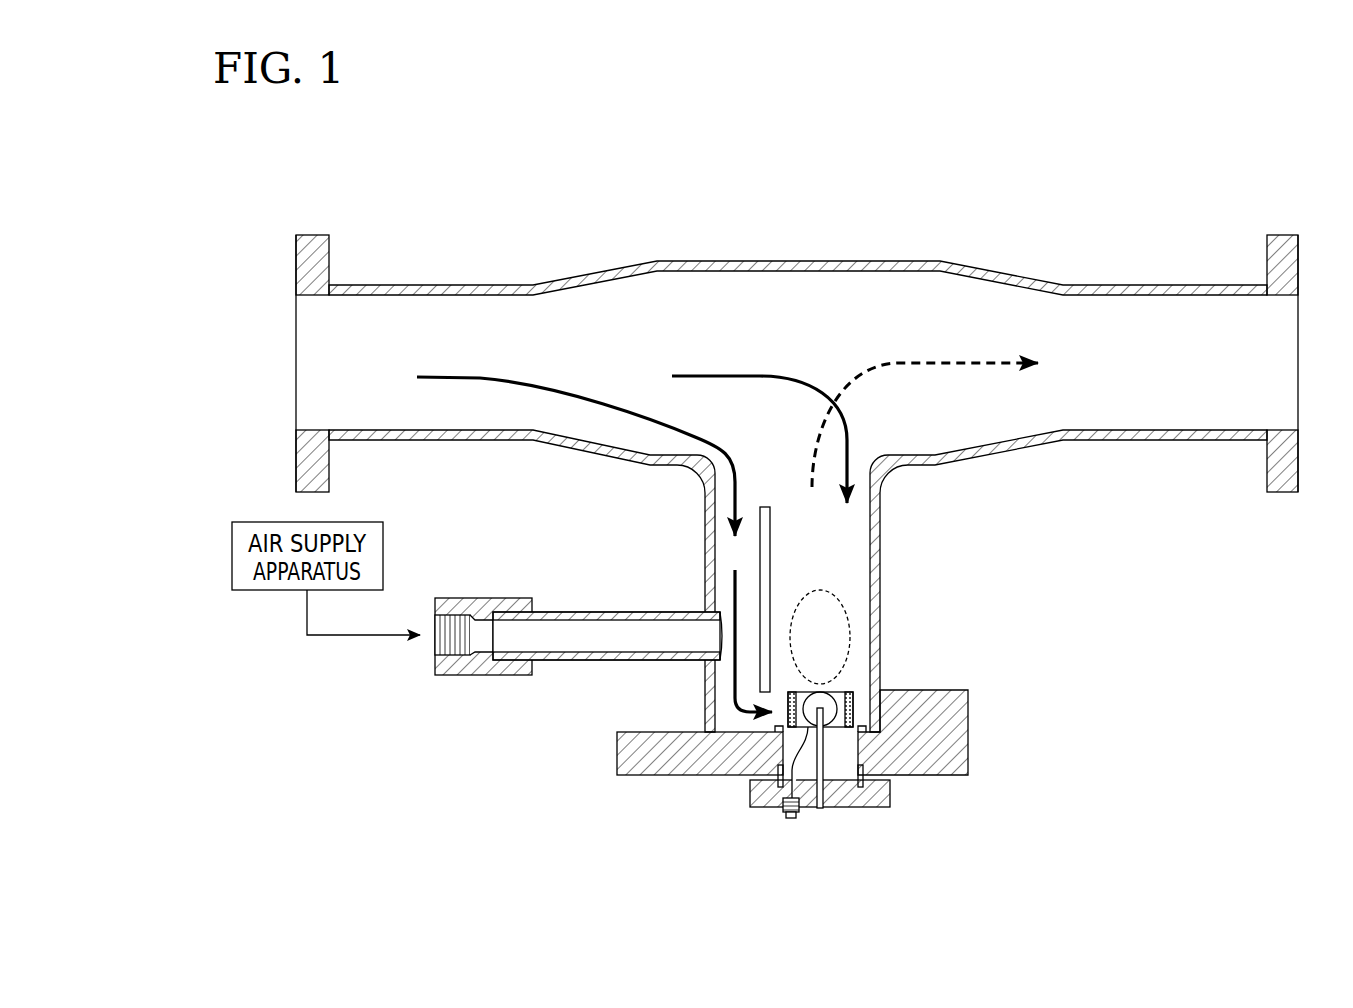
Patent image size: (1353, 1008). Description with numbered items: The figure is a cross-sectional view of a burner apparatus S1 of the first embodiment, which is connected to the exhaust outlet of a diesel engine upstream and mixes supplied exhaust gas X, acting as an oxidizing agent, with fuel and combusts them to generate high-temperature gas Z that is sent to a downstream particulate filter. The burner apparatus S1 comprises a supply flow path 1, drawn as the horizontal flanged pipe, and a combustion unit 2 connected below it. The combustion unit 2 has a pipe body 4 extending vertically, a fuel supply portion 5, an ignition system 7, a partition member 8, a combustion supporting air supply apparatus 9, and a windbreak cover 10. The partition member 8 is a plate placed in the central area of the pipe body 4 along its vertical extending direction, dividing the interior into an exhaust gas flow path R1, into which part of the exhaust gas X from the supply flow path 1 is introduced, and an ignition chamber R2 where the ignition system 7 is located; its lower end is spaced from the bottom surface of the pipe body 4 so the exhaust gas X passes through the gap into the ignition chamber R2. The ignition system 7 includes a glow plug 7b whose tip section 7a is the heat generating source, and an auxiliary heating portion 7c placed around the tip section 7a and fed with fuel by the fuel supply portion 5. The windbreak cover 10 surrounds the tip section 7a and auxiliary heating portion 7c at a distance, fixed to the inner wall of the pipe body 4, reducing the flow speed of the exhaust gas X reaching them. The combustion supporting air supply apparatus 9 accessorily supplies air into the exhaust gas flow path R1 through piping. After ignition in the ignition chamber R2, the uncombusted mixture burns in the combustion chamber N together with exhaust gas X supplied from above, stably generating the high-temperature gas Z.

The supply flow path 1 is at (797, 449).
The burner apparatus S1 is at (797, 434).
The combustion unit 2 is at (1047, 596).
The pipe body 4 is at (880, 628).
The fuel supply portion 5 is at (790, 818).
The ignition system 7 is at (836, 766).
The tip section 7a is at (822, 695).
The glow plug 7b is at (827, 723).
The auxiliary heating portion 7c is at (835, 718).
The partition member 8 is at (767, 506).
The combustion supporting air supply apparatus 9 is at (446, 684).
The windbreak cover 10 is at (853, 703).
The exhaust gas X is at (467, 380).
The high-temperature gas Z is at (955, 365).
The combustion chamber N is at (840, 593).
The exhaust gas flow path R1 is at (750, 627).
The ignition chamber R2 is at (842, 569).